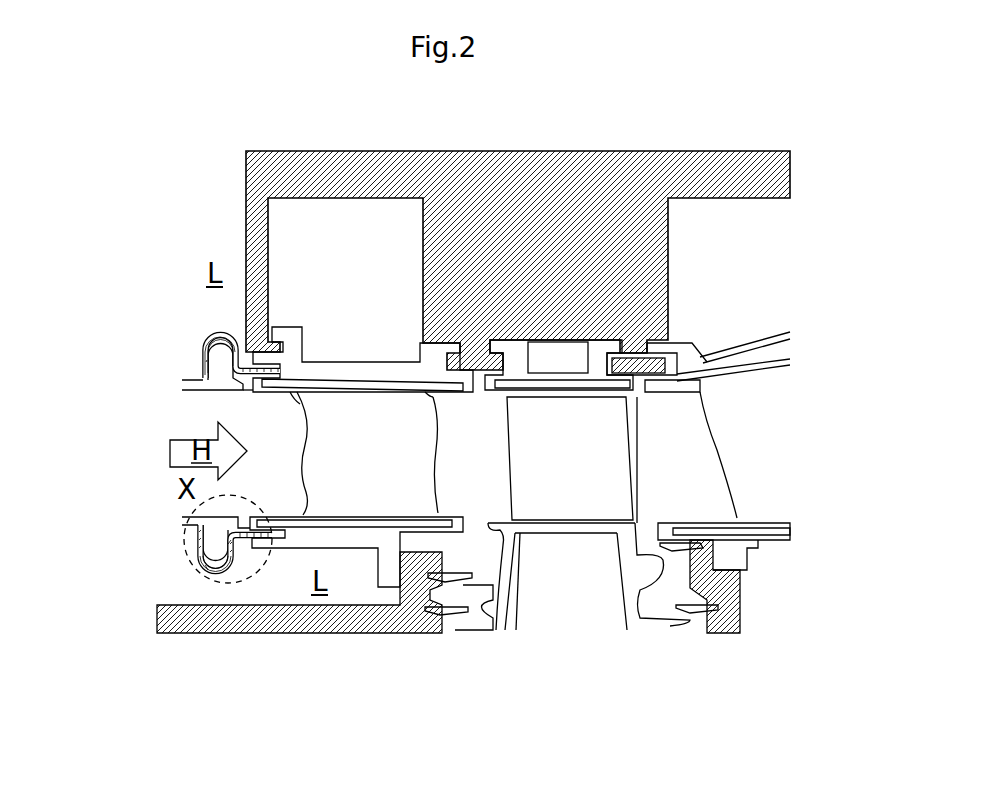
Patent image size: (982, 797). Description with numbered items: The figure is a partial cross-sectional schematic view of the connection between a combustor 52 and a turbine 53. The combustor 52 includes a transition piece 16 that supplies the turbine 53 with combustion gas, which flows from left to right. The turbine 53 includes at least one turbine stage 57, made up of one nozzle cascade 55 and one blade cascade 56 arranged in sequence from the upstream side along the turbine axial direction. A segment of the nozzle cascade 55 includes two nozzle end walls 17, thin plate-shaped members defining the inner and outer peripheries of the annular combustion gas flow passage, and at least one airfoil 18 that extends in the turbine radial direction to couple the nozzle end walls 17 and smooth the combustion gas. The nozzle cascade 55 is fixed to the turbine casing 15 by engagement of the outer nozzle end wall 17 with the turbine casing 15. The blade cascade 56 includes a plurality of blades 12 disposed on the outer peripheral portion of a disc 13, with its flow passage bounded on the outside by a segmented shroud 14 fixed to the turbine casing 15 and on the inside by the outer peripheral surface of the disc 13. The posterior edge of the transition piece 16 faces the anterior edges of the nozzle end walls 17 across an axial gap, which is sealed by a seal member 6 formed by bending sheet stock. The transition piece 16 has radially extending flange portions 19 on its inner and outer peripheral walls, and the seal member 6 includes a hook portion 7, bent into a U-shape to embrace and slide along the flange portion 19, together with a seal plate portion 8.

The seal member 6 is at (207, 357).
The hook portion 7 is at (215, 571).
The seal plate portion 8 is at (238, 536).
The blade 12 is at (638, 486).
The disc 13 is at (506, 512).
The shroud 14 is at (628, 395).
The turbine casing 15 is at (668, 284).
The transition piece 16 is at (184, 381).
The nozzle end wall 17 is at (306, 446).
The airfoil 18 is at (438, 429).
The flange portion 19 is at (225, 445).
The combustor 52 is at (127, 320).
The turbine 53 is at (813, 271).
The nozzle cascade 55 is at (452, 640).
The blade cascade 56 is at (667, 640).
The turbine stage 57 is at (585, 690).